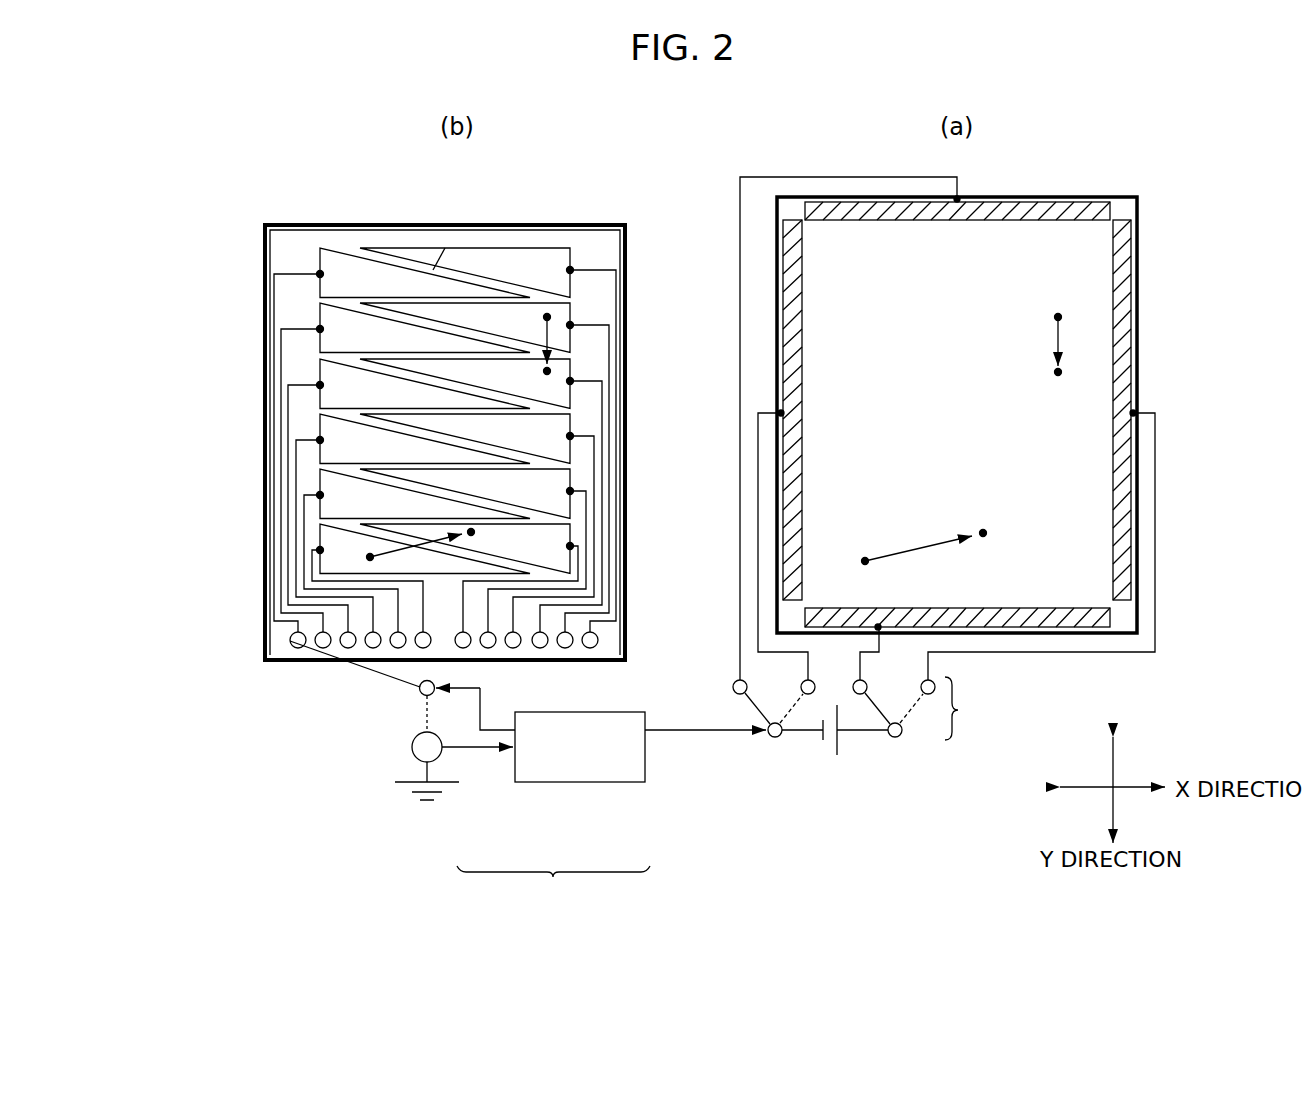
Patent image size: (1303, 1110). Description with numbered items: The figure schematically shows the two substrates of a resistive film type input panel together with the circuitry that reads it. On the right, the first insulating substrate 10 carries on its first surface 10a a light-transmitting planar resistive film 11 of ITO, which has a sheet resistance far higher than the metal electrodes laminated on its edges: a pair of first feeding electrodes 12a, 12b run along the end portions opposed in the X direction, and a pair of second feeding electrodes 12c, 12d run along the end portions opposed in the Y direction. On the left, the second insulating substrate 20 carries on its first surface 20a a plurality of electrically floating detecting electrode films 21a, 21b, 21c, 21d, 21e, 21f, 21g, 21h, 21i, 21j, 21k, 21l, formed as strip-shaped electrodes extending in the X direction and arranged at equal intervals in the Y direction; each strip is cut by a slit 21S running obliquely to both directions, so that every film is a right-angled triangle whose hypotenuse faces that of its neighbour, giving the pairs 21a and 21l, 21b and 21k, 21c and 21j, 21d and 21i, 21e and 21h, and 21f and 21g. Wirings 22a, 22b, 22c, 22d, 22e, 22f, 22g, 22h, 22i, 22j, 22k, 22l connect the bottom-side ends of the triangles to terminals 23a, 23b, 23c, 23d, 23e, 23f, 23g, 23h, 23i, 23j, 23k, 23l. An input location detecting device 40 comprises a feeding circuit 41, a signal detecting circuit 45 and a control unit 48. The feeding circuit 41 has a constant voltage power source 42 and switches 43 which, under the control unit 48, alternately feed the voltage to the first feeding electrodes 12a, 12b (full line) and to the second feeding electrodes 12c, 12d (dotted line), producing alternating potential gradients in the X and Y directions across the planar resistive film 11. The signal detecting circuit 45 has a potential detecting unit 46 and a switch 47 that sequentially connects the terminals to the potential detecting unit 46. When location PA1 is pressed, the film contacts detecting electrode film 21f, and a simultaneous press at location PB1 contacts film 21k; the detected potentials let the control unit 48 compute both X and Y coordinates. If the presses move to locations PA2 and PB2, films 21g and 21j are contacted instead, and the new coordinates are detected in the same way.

The first insulating substrate 10 is at (1028, 186).
The first surface of the first insulating substrate 10a is at (1078, 232).
The planar resistive film 11 is at (970, 447).
The first feeding electrode 12a is at (802, 318).
The first feeding electrode 12b is at (1112, 410).
The second feeding electrode 12c is at (882, 221).
The second feeding electrode 12d is at (1003, 608).
The second insulating substrate 20 is at (508, 214).
The first surface of the second insulating substrate 20a is at (557, 233).
The slit 21S is at (450, 330).
The detecting electrode film 21a is at (370, 289).
The detecting electrode film 21b is at (370, 344).
The detecting electrode film 21c is at (370, 400).
The detecting electrode film 21d is at (370, 455).
The detecting electrode film 21e is at (370, 510).
The detecting electrode film 21f is at (368, 565).
The detecting electrode film 21g is at (553, 557).
The detecting electrode film 21h is at (553, 502).
The detecting electrode film 21i is at (549, 447).
The detecting electrode film 21j is at (549, 392).
The detecting electrode film 21k is at (553, 336).
The detecting electrode film 21l is at (549, 281).
The wiring 22a is at (274, 292).
The wiring 22b is at (281, 357).
The wiring 22c is at (288, 415).
The wiring 22d is at (296, 468).
The wiring 22e is at (304, 521).
The wiring 22f is at (312, 574).
The wiring 22g is at (580, 563).
The wiring 22h is at (588, 511).
The wiring 22i is at (596, 458).
The wiring 22j is at (604, 405).
The wiring 22k is at (610, 338).
The wiring 22l is at (618, 292).
The terminal 23a is at (298, 640).
The terminal 23b is at (323, 640).
The terminal 23c is at (348, 640).
The terminal 23d is at (373, 640).
The terminal 23e is at (398, 640).
The terminal 23f is at (423, 640).
The terminal 23g is at (463, 640).
The terminal 23h is at (488, 640).
The terminal 23i is at (513, 640).
The terminal 23j is at (540, 640).
The terminal 23k is at (567, 642).
The terminal 23l is at (590, 640).
The input location detecting device 40 is at (553, 885).
The feeding circuit 41 is at (688, 745).
The constant voltage power source 42 is at (828, 743).
The switches 43 is at (863, 708).
The signal detecting circuit 45 is at (445, 802).
The potential detecting unit 46 is at (442, 754).
The switch 47 is at (418, 693).
The control unit 48 is at (577, 782).
The location PA1 is at (370, 557).
The location PA2 is at (471, 532).
The location PB1 is at (548, 318).
The location PB2 is at (548, 371).